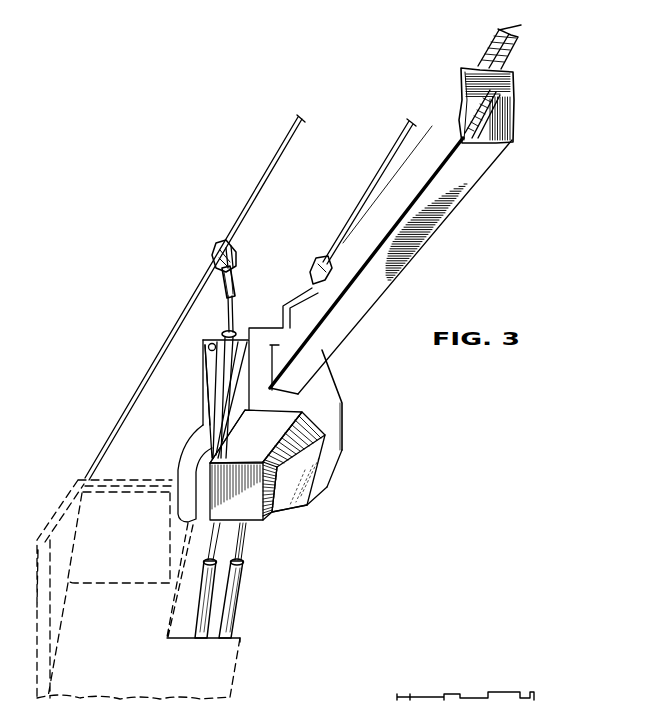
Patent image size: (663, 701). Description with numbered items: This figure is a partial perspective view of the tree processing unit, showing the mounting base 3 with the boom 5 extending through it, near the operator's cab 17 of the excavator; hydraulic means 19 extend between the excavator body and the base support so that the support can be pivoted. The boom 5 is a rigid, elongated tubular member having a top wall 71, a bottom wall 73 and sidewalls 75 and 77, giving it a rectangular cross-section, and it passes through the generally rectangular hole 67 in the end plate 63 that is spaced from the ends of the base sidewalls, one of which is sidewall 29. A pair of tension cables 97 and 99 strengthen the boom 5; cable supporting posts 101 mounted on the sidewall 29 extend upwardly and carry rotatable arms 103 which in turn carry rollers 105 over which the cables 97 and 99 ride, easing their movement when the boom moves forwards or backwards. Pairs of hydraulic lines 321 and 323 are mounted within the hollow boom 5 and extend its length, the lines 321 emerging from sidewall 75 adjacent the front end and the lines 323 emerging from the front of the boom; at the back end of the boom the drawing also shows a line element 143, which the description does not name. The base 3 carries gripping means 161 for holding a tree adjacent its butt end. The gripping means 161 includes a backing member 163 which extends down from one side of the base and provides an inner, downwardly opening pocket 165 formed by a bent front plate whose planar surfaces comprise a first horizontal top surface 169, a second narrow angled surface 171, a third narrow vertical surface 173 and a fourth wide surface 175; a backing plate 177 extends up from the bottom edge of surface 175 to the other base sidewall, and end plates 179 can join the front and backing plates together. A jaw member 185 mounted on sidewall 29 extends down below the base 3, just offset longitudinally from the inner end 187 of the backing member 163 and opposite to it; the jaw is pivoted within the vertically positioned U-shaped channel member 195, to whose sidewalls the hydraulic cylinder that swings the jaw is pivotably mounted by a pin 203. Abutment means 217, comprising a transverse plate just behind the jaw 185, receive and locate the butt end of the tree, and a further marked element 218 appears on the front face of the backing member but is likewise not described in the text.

The mounting base 3 is at (346, 396).
The boom 5 is at (440, 228).
The operator's cab 17 is at (82, 479).
The hydraulic means 19 is at (213, 594).
The sidewall 29 is at (238, 397).
The end plate 63 is at (258, 340).
The rectangular hole 67 is at (305, 383).
The top wall 71 is at (460, 78).
The bottom wall 73 is at (368, 307).
The sidewall 75 is at (441, 154).
The sidewall 77 is at (514, 114).
The tension cable 97 is at (396, 170).
The tension cable 99 is at (285, 143).
The cable supporting post 101 is at (226, 333).
The rotatable arm 103 is at (300, 306).
The roller 105 is at (318, 262).
The cable 143 is at (515, 40).
The gripping means 161 is at (336, 477).
The backing member 163 is at (319, 496).
The pocket 165 is at (256, 449).
The first horizontal top surface 169 is at (268, 432).
The second narrow angled surface 171 is at (303, 432).
The third narrow vertical surface 173 is at (315, 450).
The fourth wide surface 175 is at (292, 500).
The backing plate 177 is at (328, 488).
The end plate 179 is at (338, 456).
The jaw member 185 is at (178, 499).
The inner end 187 is at (248, 542).
The U-shaped channel member 195 is at (198, 361).
The pin 203 is at (203, 338).
The abutment means 217 is at (200, 522).
The front face 218 is at (236, 491).
The hydraulic lines 321 is at (512, 96).
The hydraulic lines 323 is at (505, 125).